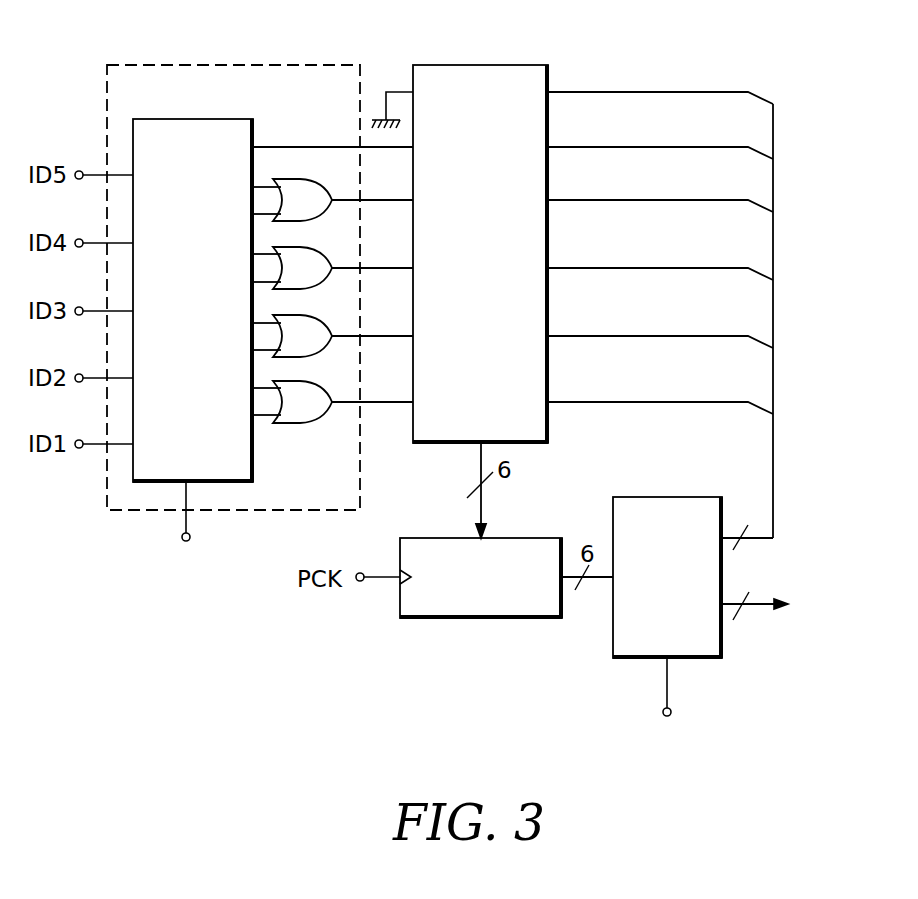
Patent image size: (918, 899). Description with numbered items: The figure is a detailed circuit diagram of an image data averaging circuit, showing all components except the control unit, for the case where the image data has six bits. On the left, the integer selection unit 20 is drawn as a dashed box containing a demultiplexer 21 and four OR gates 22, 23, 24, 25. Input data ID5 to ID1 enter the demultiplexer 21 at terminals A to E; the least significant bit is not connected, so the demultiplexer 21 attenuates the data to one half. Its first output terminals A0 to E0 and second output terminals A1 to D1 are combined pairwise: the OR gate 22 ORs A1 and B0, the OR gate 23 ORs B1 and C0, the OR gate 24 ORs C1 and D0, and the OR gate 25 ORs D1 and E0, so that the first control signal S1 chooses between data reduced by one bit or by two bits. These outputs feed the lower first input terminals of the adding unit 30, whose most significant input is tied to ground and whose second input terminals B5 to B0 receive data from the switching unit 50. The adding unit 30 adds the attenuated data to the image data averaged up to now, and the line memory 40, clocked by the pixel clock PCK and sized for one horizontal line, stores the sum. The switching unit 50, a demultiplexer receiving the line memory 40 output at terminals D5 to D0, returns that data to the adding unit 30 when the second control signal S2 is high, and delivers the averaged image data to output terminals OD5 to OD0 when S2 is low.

The integer selection unit 20 is at (225, 65).
The demultiplexer 21 is at (190, 119).
The OR gate 22 is at (303, 180).
The OR gate 23 is at (303, 248).
The OR gate 24 is at (304, 316).
The OR gate 25 is at (305, 382).
The adding unit 30 is at (479, 65).
The line memory 40 is at (535, 538).
The switching unit 50 is at (667, 497).